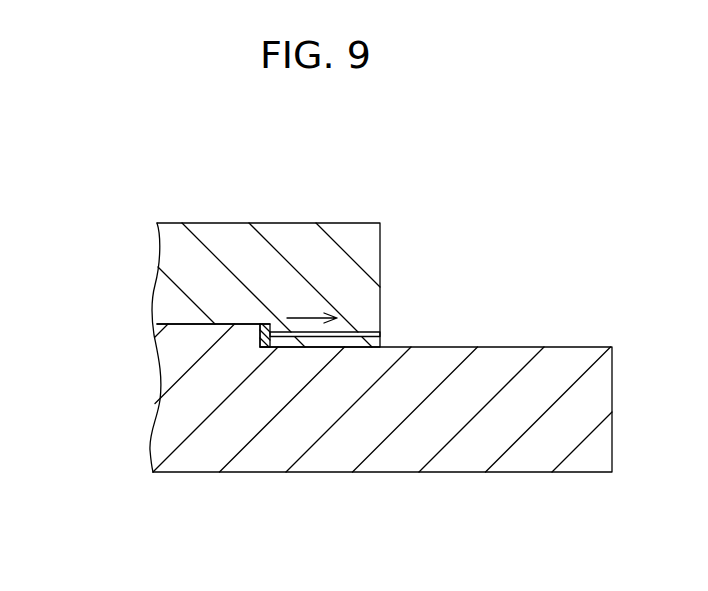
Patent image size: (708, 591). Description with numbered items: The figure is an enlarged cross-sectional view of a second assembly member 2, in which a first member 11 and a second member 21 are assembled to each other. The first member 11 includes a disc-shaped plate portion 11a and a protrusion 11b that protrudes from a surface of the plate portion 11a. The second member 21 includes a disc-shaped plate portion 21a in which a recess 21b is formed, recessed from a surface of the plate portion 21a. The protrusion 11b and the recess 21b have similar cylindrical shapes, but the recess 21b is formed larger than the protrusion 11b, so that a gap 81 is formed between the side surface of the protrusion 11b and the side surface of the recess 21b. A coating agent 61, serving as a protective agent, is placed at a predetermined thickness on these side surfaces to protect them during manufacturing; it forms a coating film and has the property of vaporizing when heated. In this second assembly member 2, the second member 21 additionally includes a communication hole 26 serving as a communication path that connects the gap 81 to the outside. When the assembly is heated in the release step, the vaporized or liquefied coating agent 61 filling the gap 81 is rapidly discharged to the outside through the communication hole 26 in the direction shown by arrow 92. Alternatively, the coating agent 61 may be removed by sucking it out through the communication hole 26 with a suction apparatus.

The second assembly member 2 is at (513, 192).
The second member 21 is at (58, 302).
The plate portion 21a is at (168, 288).
The recess 21b is at (193, 326).
The first member 11 is at (58, 385).
The plate portion 11a is at (175, 432).
The protrusion 11b is at (202, 338).
The coating agent 61 is at (262, 346).
The communication hole 26 is at (370, 332).
The gap 81 is at (267, 324).
The arrow 92 is at (315, 307).